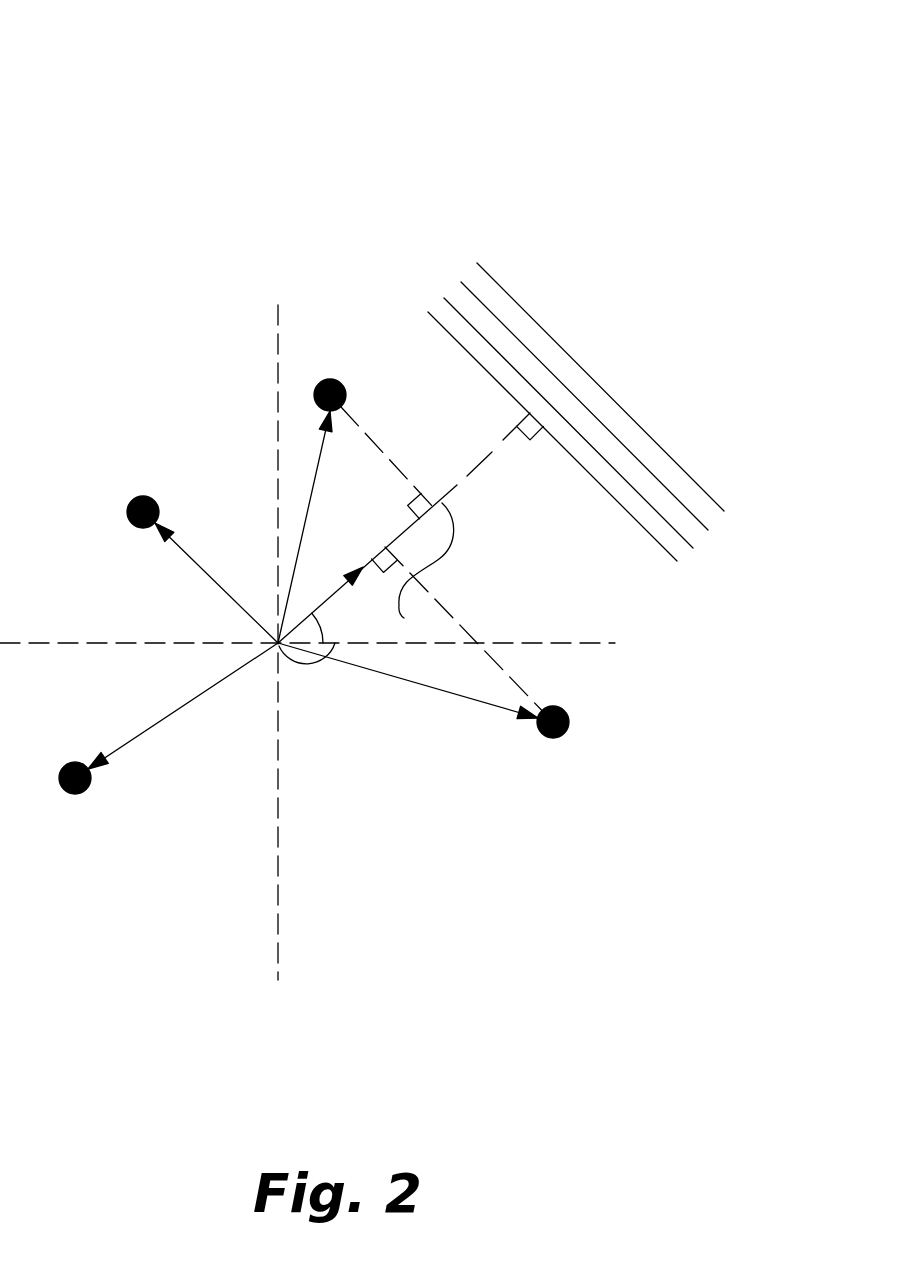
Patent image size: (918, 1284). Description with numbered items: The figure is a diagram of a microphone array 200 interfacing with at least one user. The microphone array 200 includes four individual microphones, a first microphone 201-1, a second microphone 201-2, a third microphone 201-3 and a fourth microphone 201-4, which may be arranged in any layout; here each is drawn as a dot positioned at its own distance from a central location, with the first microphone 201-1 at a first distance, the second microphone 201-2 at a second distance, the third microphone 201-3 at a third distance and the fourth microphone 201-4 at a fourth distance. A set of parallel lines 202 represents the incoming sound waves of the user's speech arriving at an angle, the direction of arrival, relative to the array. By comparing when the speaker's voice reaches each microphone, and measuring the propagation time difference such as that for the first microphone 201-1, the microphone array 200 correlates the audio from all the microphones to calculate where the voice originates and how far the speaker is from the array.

The microphone array 200 is at (143, 87).
The incoming plane wave (wavefronts) 202 is at (472, 238).
The first microphone 201-1 is at (331, 381).
The second microphone 201-2 is at (137, 498).
The third microphone 201-3 is at (75, 796).
The fourth microphone 201-4 is at (555, 737).